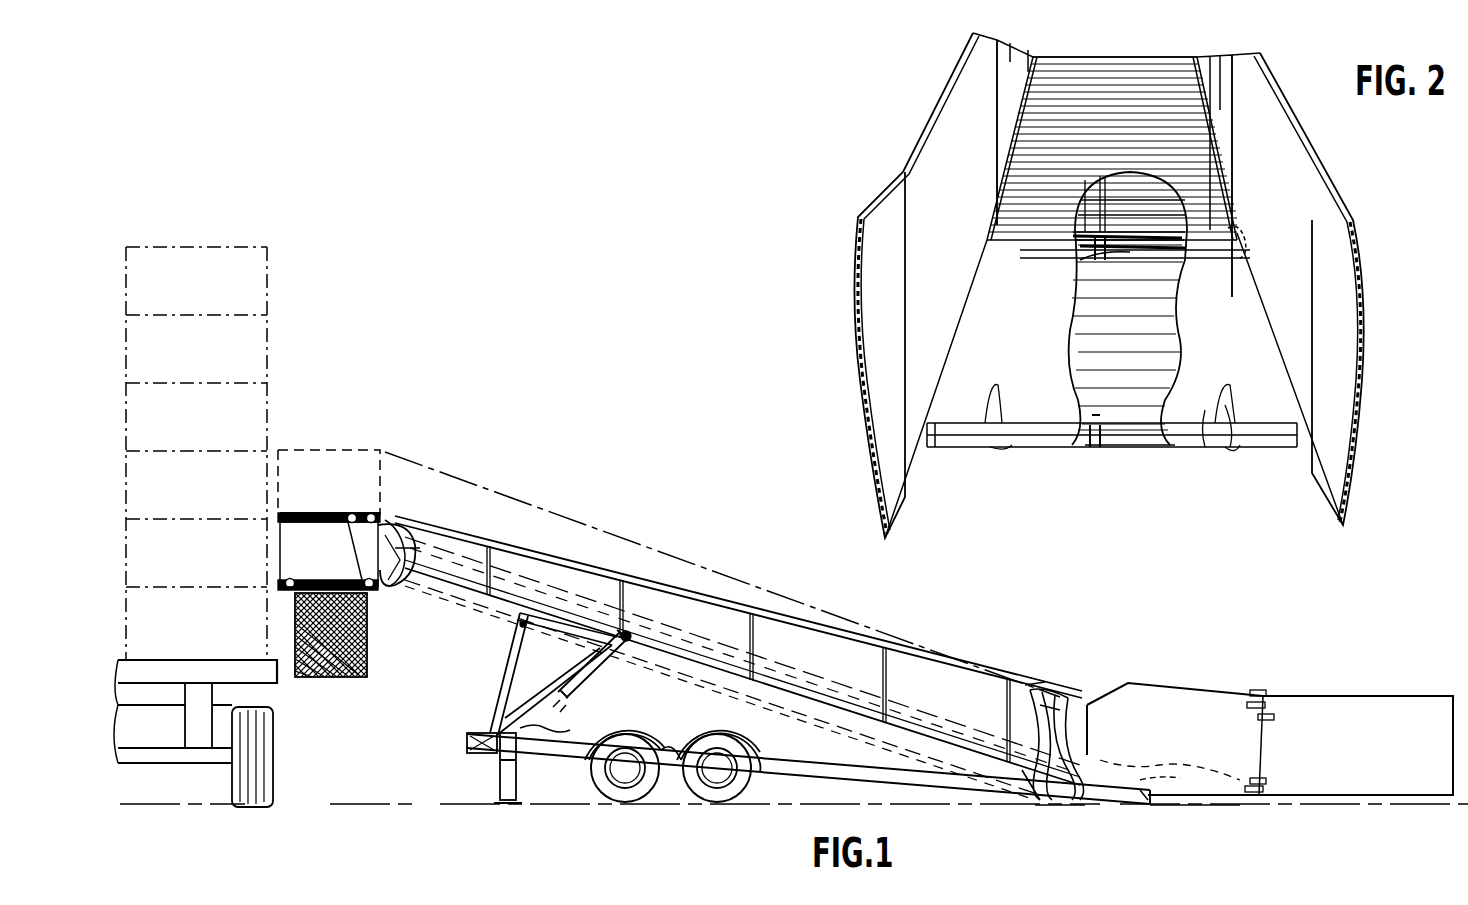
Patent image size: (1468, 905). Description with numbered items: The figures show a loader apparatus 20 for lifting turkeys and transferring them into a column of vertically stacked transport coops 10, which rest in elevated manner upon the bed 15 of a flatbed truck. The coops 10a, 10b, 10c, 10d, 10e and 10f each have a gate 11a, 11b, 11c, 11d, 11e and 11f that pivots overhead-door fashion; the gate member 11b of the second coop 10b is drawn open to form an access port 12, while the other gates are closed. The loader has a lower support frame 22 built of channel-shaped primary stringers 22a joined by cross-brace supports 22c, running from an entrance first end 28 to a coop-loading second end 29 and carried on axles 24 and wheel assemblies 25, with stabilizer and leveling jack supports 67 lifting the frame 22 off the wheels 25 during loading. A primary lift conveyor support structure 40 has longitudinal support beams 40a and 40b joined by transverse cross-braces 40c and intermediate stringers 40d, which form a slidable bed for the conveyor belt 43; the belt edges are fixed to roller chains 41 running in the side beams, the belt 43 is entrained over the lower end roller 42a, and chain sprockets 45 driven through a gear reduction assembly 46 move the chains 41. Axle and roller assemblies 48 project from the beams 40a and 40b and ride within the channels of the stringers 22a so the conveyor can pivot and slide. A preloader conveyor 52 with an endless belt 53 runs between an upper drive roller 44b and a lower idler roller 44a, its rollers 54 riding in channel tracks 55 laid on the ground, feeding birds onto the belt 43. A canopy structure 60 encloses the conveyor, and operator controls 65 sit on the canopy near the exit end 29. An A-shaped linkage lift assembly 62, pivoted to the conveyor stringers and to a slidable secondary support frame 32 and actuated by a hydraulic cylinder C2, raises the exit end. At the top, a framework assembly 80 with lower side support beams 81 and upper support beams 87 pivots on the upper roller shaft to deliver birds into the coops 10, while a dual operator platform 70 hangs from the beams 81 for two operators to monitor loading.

In FIG. 1, the coops 10 is at (152, 236).
In FIG. 1, the first coop 10a is at (174, 640).
In FIG. 1, the second coop 10b is at (174, 570).
In FIG. 1, the third coop 10c is at (172, 502).
In FIG. 1, the fourth coop 10d is at (174, 434).
In FIG. 1, the fifth coop 10e is at (174, 365).
In FIG. 1, the sixth coop 10f is at (172, 295).
In FIG. 1, the gate 11a is at (268, 632).
In FIG. 1, the gate member 11b is at (244, 526).
In FIG. 1, the gate 11c is at (268, 492).
In FIG. 1, the gate 11d is at (270, 422).
In FIG. 1, the gate 11e is at (268, 354).
In FIG. 1, the gate 11f is at (271, 280).
In FIG. 1, the access port 12 is at (306, 558).
In FIG. 1, the bed 15 is at (277, 683).
In FIG. 1, the loader apparatus 20 is at (638, 516).
In FIG. 1, the lower support frame 22 is at (930, 786).
In FIG. 1, the primary stringer 22a is at (548, 738).
In FIG. 1, the cross-brace support 22c is at (478, 728).
In FIG. 1, the axle 24 is at (623, 770).
In FIG. 1, the wheel assembly 25 is at (643, 792).
In FIG. 1, the first end 28 is at (1153, 816).
In FIG. 1, the second end 29 is at (437, 750).
In FIG. 1, the secondary support frame 32 is at (580, 702).
In FIG. 1, the hydraulic cylinder C2 is at (570, 708).
In FIG. 1, the primary lift conveyor support structure 40 is at (932, 722).
In FIG. 1, the longitudinal support beam 40a is at (686, 667).
In FIG. 2, the longitudinal support beam 40a is at (1000, 100).
In FIG. 2, the longitudinal support beam 40b is at (1200, 62).
In FIG. 2, the transverse cross-brace 40c is at (1080, 205).
In FIG. 2, the intermediate stringer 40d is at (1150, 182).
In FIG. 2, the roller chain 41 is at (1005, 135).
In FIG. 2, the lower end roller 42a is at (1080, 265).
In FIG. 2, the conveyor belt 43 is at (1135, 75).
In FIG. 2, the lower idler roller 44a is at (1140, 430).
In FIG. 1, the upper drive roller 44b is at (1148, 778).
In FIG. 2, the upper drive roller 44b is at (1165, 215).
In FIG. 1, the chain sprocket 45 is at (1148, 780).
In FIG. 2, the gear reduction assembly 46 is at (1245, 236).
In FIG. 1, the axle and roller assembly 48 is at (1168, 785).
In FIG. 2, the preloader conveyor 52 is at (1213, 435).
In FIG. 2, the endless belt 53 is at (1028, 324).
In FIG. 1, the roller 54 is at (1228, 788).
In FIG. 1, the channel track 55 is at (1222, 800).
In FIG. 1, the canopy structure 60 is at (915, 662).
In FIG. 1, the linkage lift assembly 62 is at (508, 668).
In FIG. 1, the operator controls 65 is at (400, 540).
In FIG. 1, the stabilizer and leveling jack support 67 is at (503, 772).
In FIG. 1, the dual operator platform 70 is at (342, 678).
In FIG. 1, the framework assembly 80 is at (332, 452).
In FIG. 1, the lower side support beam 81 is at (282, 595).
In FIG. 1, the upper support beam 87 is at (339, 512).